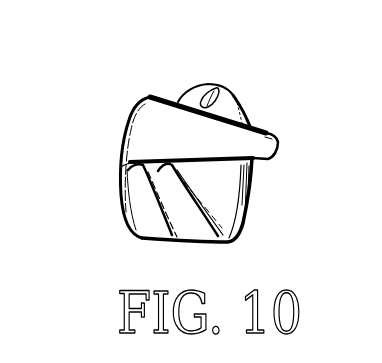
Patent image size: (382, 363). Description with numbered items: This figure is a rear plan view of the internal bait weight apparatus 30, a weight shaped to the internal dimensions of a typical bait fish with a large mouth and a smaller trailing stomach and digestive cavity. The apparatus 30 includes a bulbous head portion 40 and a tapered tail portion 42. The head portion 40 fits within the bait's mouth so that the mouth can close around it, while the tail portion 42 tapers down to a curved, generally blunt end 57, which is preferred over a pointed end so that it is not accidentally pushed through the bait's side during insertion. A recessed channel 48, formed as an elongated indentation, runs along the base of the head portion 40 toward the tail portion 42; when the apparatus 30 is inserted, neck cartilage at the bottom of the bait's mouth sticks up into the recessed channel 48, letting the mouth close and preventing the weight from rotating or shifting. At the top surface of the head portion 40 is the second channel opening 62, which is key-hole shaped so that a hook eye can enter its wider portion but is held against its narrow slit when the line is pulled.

The internal bait weight apparatus 30 is at (268, 99).
The bulbous head portion 40 is at (191, 96).
The tapered tail portion 42 is at (121, 145).
The recessed channel 48 is at (181, 237).
The blunt end 57 is at (284, 142).
The second channel opening 62 is at (217, 88).